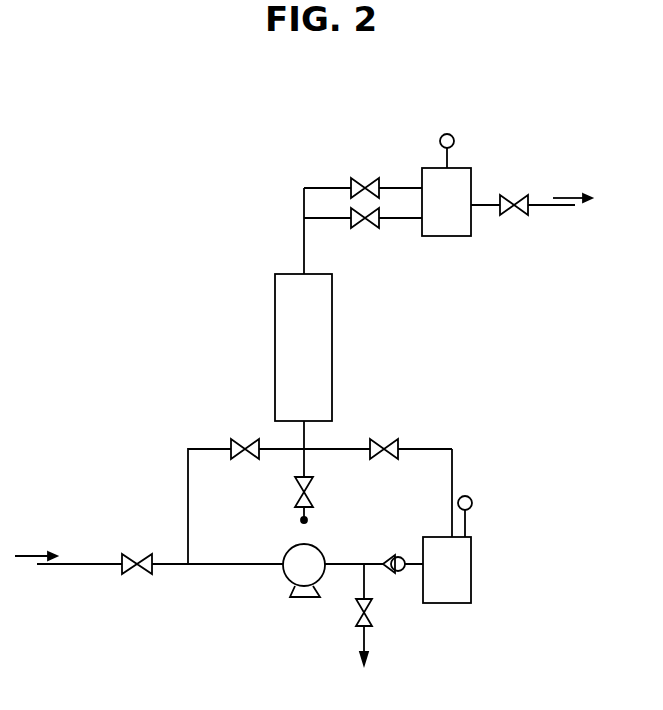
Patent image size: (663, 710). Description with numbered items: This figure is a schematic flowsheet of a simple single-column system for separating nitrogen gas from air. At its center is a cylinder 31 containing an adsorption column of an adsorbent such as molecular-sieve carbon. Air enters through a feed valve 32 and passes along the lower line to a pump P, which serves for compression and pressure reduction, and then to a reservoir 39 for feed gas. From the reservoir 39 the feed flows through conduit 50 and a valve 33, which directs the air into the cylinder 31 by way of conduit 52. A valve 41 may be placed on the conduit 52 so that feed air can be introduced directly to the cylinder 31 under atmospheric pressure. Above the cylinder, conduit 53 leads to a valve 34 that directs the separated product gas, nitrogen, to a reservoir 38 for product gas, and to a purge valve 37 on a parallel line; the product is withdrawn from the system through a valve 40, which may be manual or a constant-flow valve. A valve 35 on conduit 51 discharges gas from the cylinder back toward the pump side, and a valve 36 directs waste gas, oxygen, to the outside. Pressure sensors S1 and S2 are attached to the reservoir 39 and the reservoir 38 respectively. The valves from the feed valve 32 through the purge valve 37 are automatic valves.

The cylinder 31 is at (320, 338).
The feed valve 32 is at (137, 574).
The valve 33 is at (386, 440).
The valve 34 is at (365, 179).
The valve 35 is at (245, 440).
The valve 36 is at (372, 612).
The purge valve 37 is at (366, 229).
The reservoir for product gas 38 is at (463, 190).
The reservoir for feed gas 39 is at (463, 588).
The valve 40 is at (514, 213).
The valve 41 is at (313, 490).
The conduit 50 is at (453, 463).
The conduit 51 is at (188, 475).
The conduit 52 is at (305, 437).
The conduit 53 is at (303, 250).
The pressure sensor S1 is at (472, 500).
The pressure sensor S2 is at (453, 135).
The pump P is at (292, 572).